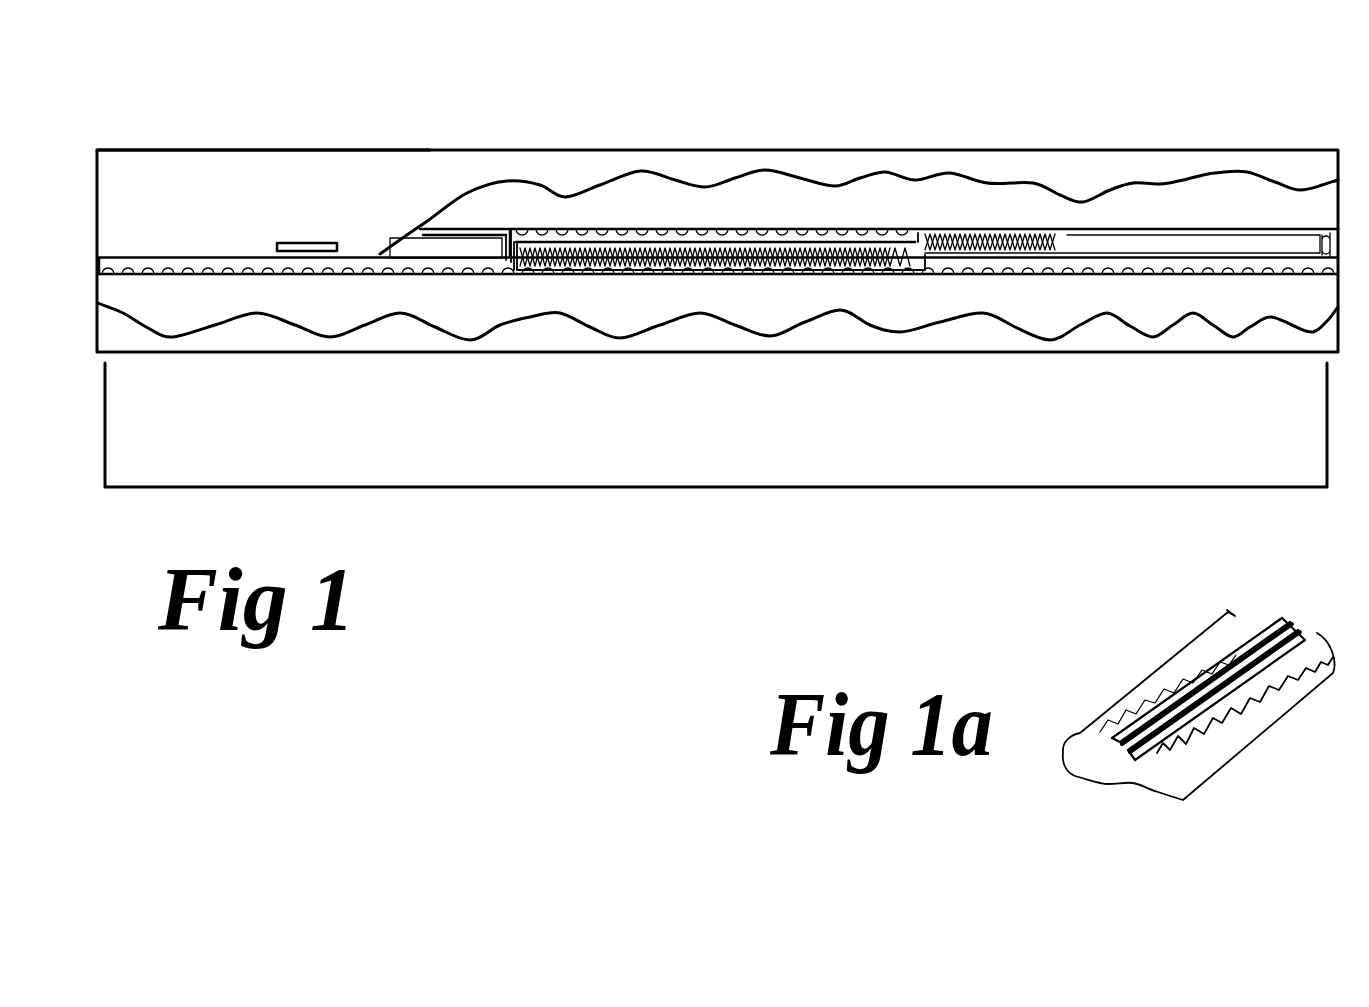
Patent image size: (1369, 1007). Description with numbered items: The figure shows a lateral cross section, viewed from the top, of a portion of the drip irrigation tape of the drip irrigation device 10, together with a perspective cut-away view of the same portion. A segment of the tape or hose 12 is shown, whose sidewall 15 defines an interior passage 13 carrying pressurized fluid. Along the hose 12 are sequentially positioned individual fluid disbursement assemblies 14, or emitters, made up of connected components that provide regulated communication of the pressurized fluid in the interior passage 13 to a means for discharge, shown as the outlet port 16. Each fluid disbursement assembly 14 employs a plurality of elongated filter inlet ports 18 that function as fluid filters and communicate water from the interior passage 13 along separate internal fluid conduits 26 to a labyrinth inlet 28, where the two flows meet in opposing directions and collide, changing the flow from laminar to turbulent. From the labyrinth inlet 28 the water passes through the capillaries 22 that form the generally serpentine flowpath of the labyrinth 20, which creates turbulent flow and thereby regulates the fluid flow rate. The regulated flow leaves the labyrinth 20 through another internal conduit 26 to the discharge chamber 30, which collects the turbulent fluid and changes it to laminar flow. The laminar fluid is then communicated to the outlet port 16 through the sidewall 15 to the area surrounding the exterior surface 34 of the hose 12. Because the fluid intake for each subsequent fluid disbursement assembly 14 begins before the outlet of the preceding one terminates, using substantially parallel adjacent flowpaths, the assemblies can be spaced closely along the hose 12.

In FIG. 1, the drip irrigation device 10 is at (803, 150).
In FIG. 1, the hose 12 is at (985, 335).
In FIG. 1A, the hose 12 is at (1080, 777).
In FIG. 1, the interior passage 13 is at (1235, 210).
In FIG. 1A, the interior passage 13 is at (1162, 785).
In FIG. 1, the fluid disbursement assembly 14 is at (680, 488).
In FIG. 1A, the sidewall 15 is at (1132, 783).
In FIG. 1, the outlet port 16 is at (315, 242).
In FIG. 1, the filter inlet port 18 is at (630, 238).
In FIG. 1, the labyrinth 20 is at (660, 270).
In FIG. 1, the capillaries 22 is at (1012, 240).
In FIG. 1, the internal fluid conduit 26 is at (520, 240).
In FIG. 1, the labyrinth inlet 28 is at (514, 277).
In FIG. 1, the discharge chamber 30 is at (455, 245).
In FIG. 1, the exterior surface 34 is at (233, 133).